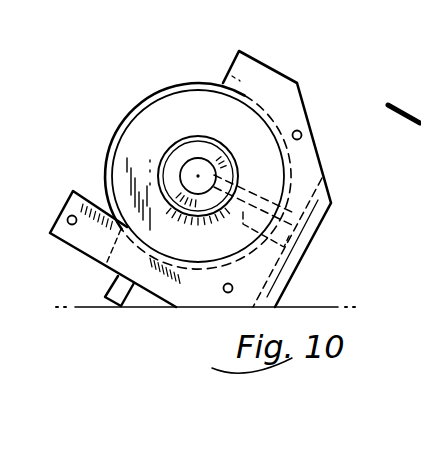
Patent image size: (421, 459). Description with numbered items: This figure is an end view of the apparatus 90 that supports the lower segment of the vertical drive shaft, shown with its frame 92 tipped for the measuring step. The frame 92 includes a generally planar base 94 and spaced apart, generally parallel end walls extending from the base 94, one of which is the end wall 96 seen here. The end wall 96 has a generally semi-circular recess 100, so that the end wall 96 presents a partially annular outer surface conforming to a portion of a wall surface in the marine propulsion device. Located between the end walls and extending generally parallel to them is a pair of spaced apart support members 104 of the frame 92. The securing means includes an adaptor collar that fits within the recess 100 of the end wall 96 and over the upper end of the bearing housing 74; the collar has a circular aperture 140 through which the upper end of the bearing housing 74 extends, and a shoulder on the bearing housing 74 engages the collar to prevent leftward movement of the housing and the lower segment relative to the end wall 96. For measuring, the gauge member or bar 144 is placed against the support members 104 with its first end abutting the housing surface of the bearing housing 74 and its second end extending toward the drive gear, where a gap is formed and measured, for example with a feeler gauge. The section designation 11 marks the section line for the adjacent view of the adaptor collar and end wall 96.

The bearing housing 74 is at (168, 147).
The apparatus 90 is at (333, 208).
The frame 92 is at (288, 262).
The base 94 is at (268, 283).
The end wall 96 is at (262, 93).
The semi-circular recess 100 is at (240, 106).
The support members 104 is at (300, 227).
The circular aperture 140 is at (205, 114).
The gauge member 144 is at (236, 181).
The section line 11- 11 is at (403, 102).